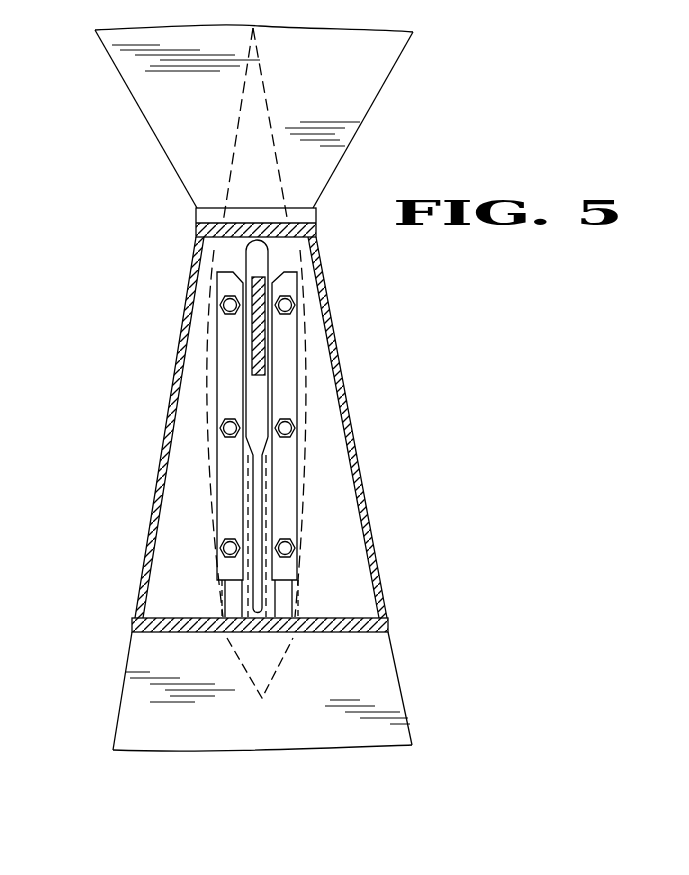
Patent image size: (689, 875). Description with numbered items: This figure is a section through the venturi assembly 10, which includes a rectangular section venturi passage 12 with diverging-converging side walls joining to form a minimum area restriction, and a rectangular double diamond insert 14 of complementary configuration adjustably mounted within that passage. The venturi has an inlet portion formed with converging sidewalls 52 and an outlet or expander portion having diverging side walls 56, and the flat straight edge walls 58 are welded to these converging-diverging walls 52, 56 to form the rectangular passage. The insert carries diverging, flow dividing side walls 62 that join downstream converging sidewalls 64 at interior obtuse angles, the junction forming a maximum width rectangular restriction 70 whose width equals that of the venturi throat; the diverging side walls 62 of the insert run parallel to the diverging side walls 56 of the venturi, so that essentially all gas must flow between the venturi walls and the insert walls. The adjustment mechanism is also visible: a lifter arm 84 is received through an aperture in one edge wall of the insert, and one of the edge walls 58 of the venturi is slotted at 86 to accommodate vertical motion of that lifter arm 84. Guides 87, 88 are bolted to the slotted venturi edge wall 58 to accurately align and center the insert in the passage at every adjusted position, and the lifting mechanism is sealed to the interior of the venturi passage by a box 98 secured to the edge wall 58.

The venturi assembly 10 is at (100, 122).
The venturi passage 12 is at (188, 202).
The double diamond insert 14 is at (294, 178).
The converging sidewalls 52 is at (112, 64).
The diverging side walls 56 is at (125, 672).
The straight edge walls 58 is at (333, 58).
The diverging side walls 62 is at (242, 105).
The converging sidewalls 64 is at (210, 430).
The maximum width rectangular restriction 70 is at (310, 322).
The lifter arm 84 is at (259, 278).
The slot 86 is at (262, 251).
The guide 87 is at (222, 362).
The guide 88 is at (290, 352).
The box 98 is at (360, 448).